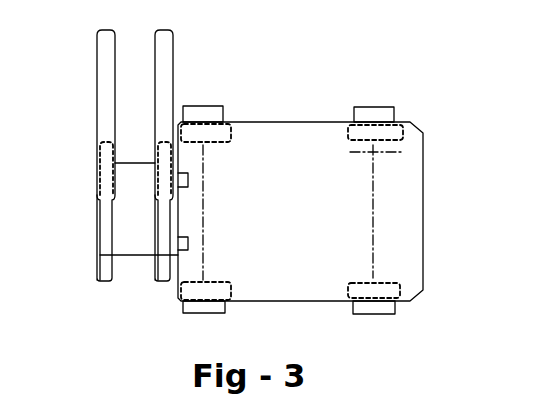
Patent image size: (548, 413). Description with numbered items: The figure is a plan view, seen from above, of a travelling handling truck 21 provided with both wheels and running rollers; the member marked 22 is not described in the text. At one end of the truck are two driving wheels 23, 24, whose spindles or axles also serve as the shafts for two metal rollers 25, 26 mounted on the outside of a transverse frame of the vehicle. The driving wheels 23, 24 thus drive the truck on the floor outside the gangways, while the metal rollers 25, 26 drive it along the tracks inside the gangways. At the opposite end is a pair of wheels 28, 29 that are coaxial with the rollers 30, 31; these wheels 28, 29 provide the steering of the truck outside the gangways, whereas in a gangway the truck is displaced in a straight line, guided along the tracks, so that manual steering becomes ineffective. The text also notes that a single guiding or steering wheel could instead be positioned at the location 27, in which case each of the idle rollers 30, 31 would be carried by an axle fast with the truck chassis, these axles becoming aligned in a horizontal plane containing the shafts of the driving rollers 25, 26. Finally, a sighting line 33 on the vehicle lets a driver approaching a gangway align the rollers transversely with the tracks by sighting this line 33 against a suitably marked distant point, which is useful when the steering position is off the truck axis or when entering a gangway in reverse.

The travelling handling truck 21 is at (293, 132).
The support rods (legs) 22 is at (137, 155).
The driving wheel 23 is at (231, 133).
The driving wheel 24 is at (178, 292).
The metal roller 25 is at (204, 113).
The metal roller 26 is at (218, 307).
The position for single guiding or steering wheel 27 is at (373, 212).
The steering wheel 28 is at (397, 137).
The steering wheel 29 is at (398, 290).
The idle roller 30 is at (383, 110).
The idle roller 31 is at (378, 308).
The sighting line 33 is at (401, 152).